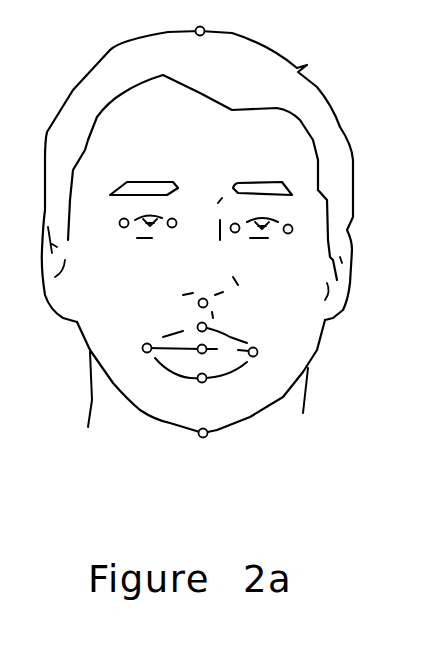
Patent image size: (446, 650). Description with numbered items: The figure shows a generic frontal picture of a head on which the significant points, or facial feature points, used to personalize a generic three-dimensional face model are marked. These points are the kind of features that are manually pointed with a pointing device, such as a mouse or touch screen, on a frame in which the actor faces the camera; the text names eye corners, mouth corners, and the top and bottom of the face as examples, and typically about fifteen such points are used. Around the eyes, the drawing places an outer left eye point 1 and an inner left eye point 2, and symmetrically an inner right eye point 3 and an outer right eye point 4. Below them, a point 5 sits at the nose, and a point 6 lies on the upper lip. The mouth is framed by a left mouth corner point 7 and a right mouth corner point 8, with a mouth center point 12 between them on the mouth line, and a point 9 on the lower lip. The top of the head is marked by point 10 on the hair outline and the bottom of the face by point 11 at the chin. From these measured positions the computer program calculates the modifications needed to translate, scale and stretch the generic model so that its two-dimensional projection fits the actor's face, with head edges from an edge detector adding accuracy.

The facial feature point 1 is at (113, 222).
The facial feature point 2 is at (181, 208).
The facial feature point 3 is at (232, 212).
The facial feature point 4 is at (299, 222).
The facial feature point 5 is at (206, 286).
The facial feature point 6 is at (194, 319).
The facial feature point 7 is at (135, 339).
The facial feature point 8 is at (264, 344).
The facial feature point 9 is at (193, 387).
The facial feature point 10 is at (200, 18).
The facial feature point 11 is at (207, 446).
The facial feature point 12 is at (219, 350).